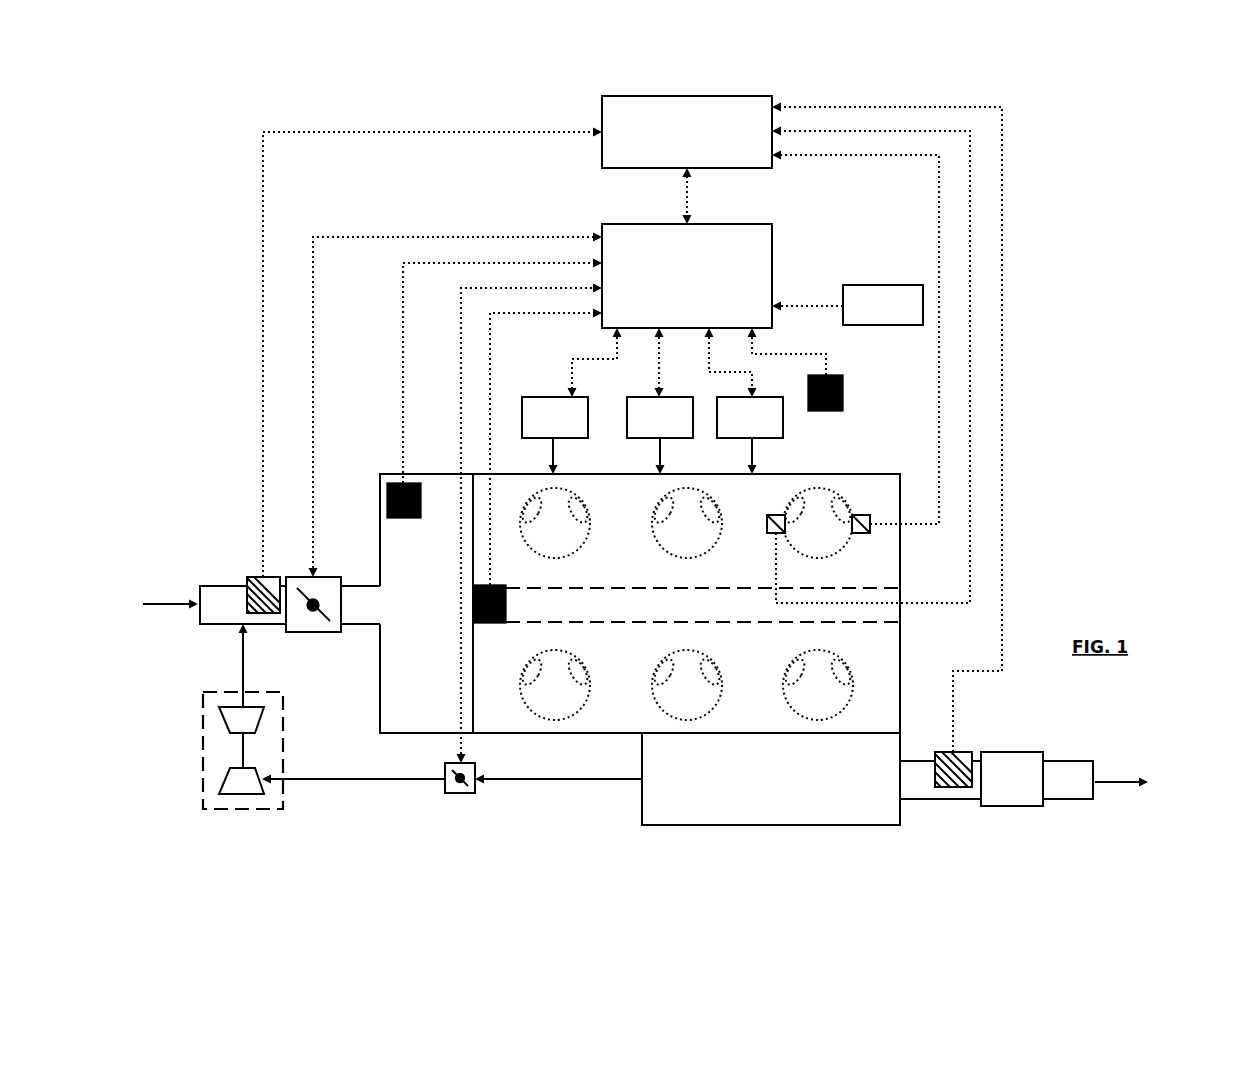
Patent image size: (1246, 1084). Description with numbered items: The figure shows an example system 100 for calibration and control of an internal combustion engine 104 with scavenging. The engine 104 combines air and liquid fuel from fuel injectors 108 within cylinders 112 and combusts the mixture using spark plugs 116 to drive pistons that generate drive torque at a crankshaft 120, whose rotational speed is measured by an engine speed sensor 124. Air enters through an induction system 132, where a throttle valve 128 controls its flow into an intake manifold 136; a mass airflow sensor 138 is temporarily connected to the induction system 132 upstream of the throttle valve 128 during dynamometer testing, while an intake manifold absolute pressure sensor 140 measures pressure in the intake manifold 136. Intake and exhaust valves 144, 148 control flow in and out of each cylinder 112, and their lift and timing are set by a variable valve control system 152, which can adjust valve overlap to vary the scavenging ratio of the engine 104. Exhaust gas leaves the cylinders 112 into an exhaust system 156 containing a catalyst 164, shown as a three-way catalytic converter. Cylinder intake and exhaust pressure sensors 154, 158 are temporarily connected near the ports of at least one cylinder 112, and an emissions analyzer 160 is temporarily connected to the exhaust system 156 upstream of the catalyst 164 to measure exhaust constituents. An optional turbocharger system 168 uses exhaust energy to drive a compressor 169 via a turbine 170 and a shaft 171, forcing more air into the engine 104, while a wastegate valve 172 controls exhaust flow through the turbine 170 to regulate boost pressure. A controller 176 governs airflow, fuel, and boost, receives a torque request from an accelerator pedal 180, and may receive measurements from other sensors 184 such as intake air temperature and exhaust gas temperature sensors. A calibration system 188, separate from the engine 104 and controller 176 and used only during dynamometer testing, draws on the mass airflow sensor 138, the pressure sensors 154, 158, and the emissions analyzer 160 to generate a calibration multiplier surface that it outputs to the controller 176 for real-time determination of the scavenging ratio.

The system 100 is at (1040, 127).
The engine 104 is at (866, 474).
The fuel injectors 108 is at (542, 397).
The cylinders 112 is at (582, 546).
The spark plugs 116 is at (628, 438).
The crankshaft 120 is at (703, 605).
The engine speed sensor 124 is at (506, 605).
The throttle valve 128 is at (313, 632).
The induction system 132 is at (215, 625).
The intake manifold 136 is at (380, 683).
The mass airflow sensor 138 is at (250, 577).
The intake manifold absolute pressure sensor 140 is at (403, 518).
The intake valves 144 is at (538, 678).
The exhaust valves 148 is at (837, 677).
The variable valve control system 152 is at (783, 418).
The cylinder intake pressure sensor 154 is at (774, 515).
The exhaust system 156 is at (801, 825).
The cylinder exhaust pressure sensor 158 is at (861, 533).
The emissions analyzer 160 is at (955, 787).
The catalyst 164 is at (1012, 751).
The turbocharger system 168 is at (245, 809).
The compressor 169 is at (222, 720).
The turbine 170 is at (222, 787).
The shaft 171 is at (243, 750).
The wastegate valve 172 is at (462, 793).
The controller 176 is at (772, 242).
The accelerator pedal 180 is at (882, 285).
The other sensors 184 is at (843, 400).
The calibration system 188 is at (692, 96).